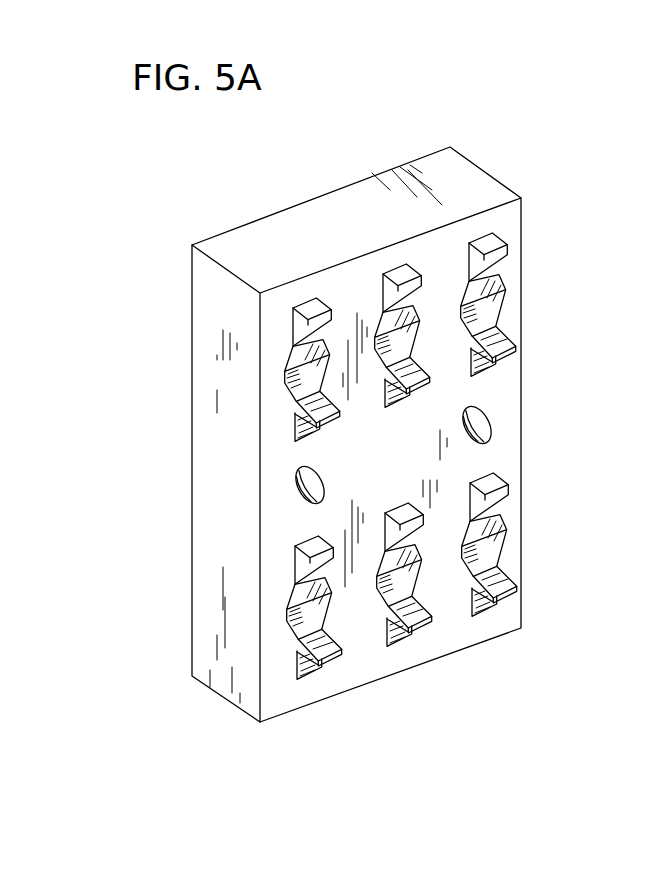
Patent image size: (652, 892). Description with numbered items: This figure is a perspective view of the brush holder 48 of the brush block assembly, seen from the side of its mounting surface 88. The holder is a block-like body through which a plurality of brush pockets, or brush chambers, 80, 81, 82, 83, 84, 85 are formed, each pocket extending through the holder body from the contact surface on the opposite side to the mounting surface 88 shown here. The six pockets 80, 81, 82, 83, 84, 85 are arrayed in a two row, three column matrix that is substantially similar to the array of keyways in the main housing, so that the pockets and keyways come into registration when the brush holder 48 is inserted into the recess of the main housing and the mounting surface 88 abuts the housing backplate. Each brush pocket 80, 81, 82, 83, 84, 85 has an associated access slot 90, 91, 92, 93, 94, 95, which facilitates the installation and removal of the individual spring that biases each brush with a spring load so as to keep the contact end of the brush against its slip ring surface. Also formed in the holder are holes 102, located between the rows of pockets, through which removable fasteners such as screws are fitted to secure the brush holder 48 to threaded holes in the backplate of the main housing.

The brush holder 48 is at (443, 178).
The brush pocket 80 is at (431, 255).
The brush pocket 81 is at (279, 364).
The brush pocket 82 is at (228, 341).
The brush pocket 83 is at (533, 582).
The brush pocket 84 is at (450, 618).
The brush pocket 85 is at (367, 652).
The mounting surface 88 is at (356, 443).
The access slot 90 is at (490, 368).
The access slot 91 is at (387, 404).
The access slot 92 is at (305, 432).
The access slot 93 is at (483, 608).
The access slot 94 is at (395, 640).
The access slot 95 is at (307, 675).
The holes 102 is at (325, 487).